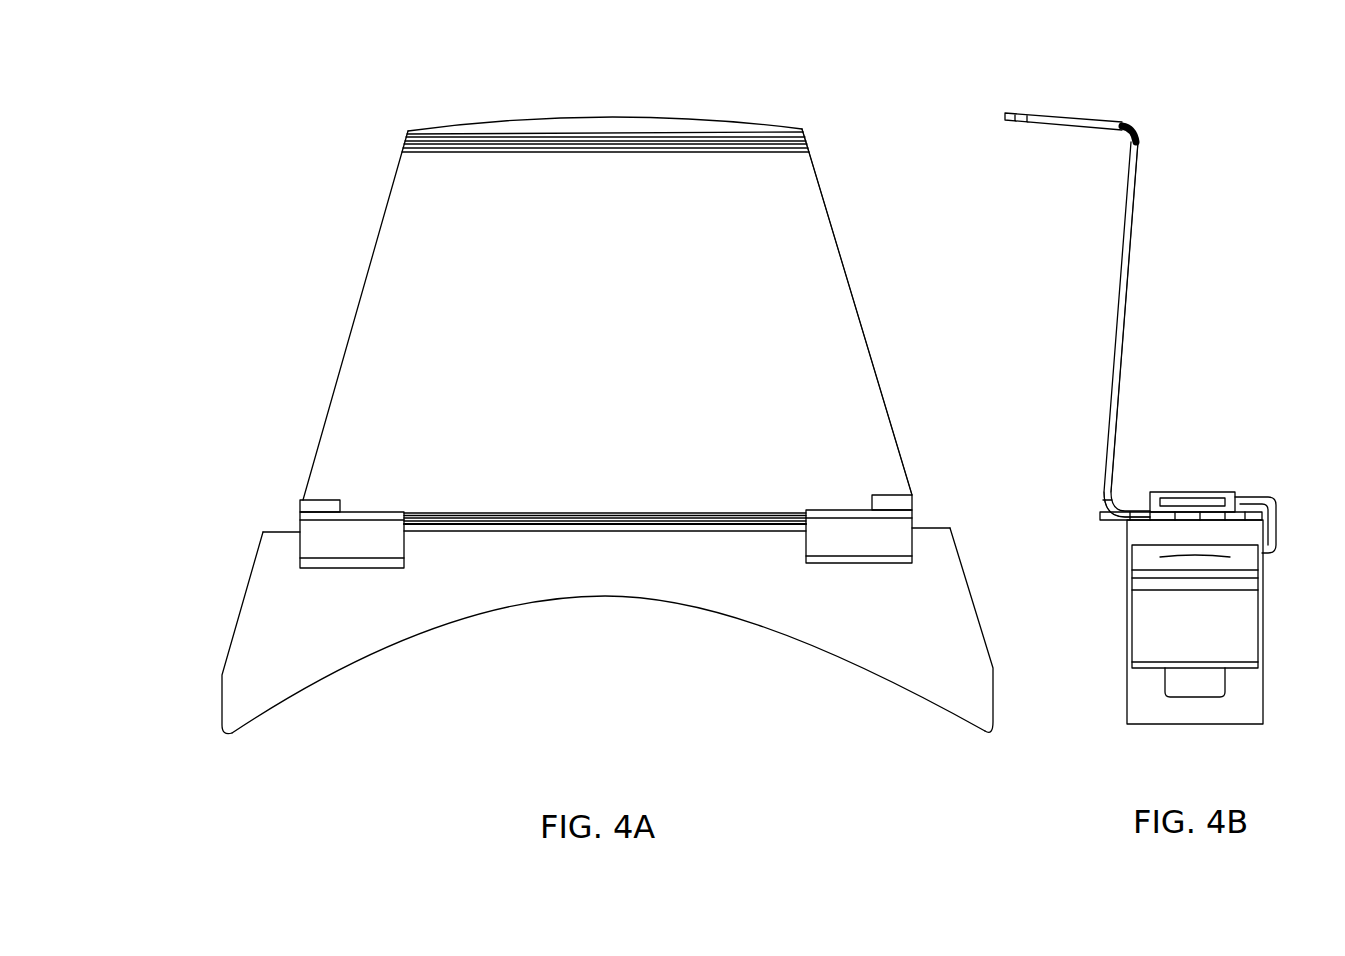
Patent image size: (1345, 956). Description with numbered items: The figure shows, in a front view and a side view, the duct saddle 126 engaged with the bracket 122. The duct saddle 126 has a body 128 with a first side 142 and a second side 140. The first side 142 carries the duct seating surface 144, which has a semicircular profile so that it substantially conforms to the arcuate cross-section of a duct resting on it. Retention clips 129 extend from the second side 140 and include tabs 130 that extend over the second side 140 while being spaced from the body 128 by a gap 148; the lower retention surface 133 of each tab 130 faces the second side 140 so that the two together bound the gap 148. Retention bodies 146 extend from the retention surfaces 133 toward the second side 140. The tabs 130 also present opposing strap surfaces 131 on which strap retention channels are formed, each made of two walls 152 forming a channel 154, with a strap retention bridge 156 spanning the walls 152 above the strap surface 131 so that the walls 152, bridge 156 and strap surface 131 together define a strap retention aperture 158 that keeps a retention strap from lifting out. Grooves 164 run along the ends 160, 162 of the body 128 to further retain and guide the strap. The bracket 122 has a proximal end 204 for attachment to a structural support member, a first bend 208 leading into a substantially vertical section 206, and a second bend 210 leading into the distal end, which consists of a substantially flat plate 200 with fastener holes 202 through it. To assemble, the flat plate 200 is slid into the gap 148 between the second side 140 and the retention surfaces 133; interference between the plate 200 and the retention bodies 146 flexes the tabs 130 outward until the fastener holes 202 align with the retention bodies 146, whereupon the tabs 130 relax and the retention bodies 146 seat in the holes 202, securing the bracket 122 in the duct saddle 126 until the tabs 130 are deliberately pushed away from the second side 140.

In FIG. 4A, the bracket 122 is at (838, 240).
In FIG. 4B, the bracket 122 is at (1128, 244).
In FIG. 4A, the duct saddle 126 is at (946, 529).
In FIG. 4B, the duct saddle 126 is at (1265, 606).
In FIG. 4A, the body 128 is at (526, 582).
In FIG. 4A, the retention clips 129 is at (300, 458).
In FIG. 4B, the retention clips 129 is at (1266, 447).
In FIG. 4A, the tabs 130 is at (370, 512).
In FIG. 4B, the tabs 130 is at (1250, 493).
In FIG. 4B, the strap surfaces 131 is at (1240, 497).
In FIG. 4B, the retention surface 133 is at (1275, 515).
In FIG. 4A, the second side 140 is at (268, 524).
In FIG. 4A, the first side 142 is at (630, 597).
In FIG. 4B, the first side 142 is at (1190, 730).
In FIG. 4A, the duct seating surface 144 is at (774, 616).
In FIG. 4B, the retention bodies 146 is at (1185, 520).
In FIG. 4B, the gap 148 is at (1132, 525).
In FIG. 4A, the walls 152 is at (305, 500).
In FIG. 4B, the walls 152 is at (1163, 494).
In FIG. 4B, the channel 154 is at (1178, 500).
In FIG. 4B, the strap retention bridge 156 is at (1192, 500).
In FIG. 4B, the strap retention aperture 158 is at (1213, 498).
In FIG. 4A, the end 160 is at (233, 603).
In FIG. 4B, the end 160 is at (1120, 662).
In FIG. 4A, the end 162 is at (990, 622).
In FIG. 4B, the grooves 164 is at (1193, 685).
In FIG. 4B, the flat plate 200 is at (1136, 528).
In FIG. 4B, the fastener holes 202 is at (1200, 521).
In FIG. 4A, the proximal end 204 is at (690, 120).
In FIG. 4B, the proximal end 204 is at (1055, 113).
In FIG. 4A, the substantially vertical section 206 is at (832, 300).
In FIG. 4B, the substantially vertical section 206 is at (1130, 318).
In FIG. 4A, the first bend 208 is at (790, 140).
In FIG. 4B, the first bend 208 is at (1140, 128).
In FIG. 4A, the second bend 210 is at (662, 513).
In FIG. 4B, the second bend 210 is at (1104, 512).